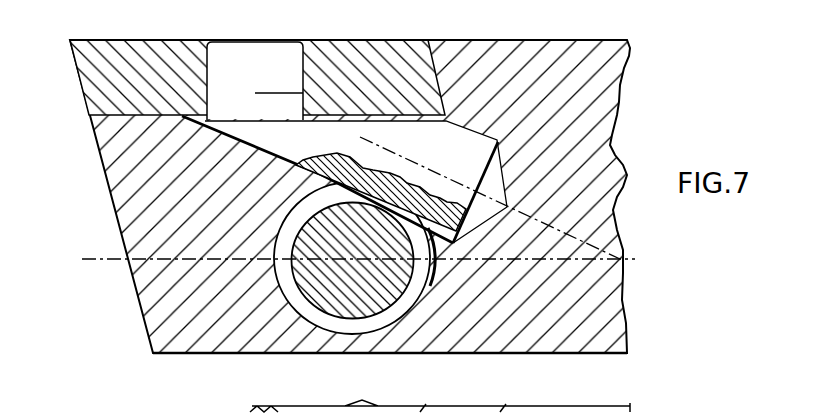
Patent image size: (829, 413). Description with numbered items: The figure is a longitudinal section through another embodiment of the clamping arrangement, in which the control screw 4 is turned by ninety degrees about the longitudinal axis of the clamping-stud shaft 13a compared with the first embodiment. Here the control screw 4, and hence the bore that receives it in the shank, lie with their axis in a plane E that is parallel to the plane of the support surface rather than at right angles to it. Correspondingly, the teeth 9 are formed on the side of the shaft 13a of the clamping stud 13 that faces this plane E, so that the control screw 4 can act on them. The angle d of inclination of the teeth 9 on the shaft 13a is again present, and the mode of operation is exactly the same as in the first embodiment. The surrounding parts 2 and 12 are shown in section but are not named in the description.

The upper plate / cover 2 is at (137, 52).
The control screw 4 is at (378, 300).
The teeth 9 is at (428, 226).
The body block 12 is at (497, 333).
The clamping stud 13 is at (344, 137).
The shaft of the clamping stud 13a is at (465, 136).
The angle of inclination of the teeth d is at (549, 229).
The plane E is at (103, 262).